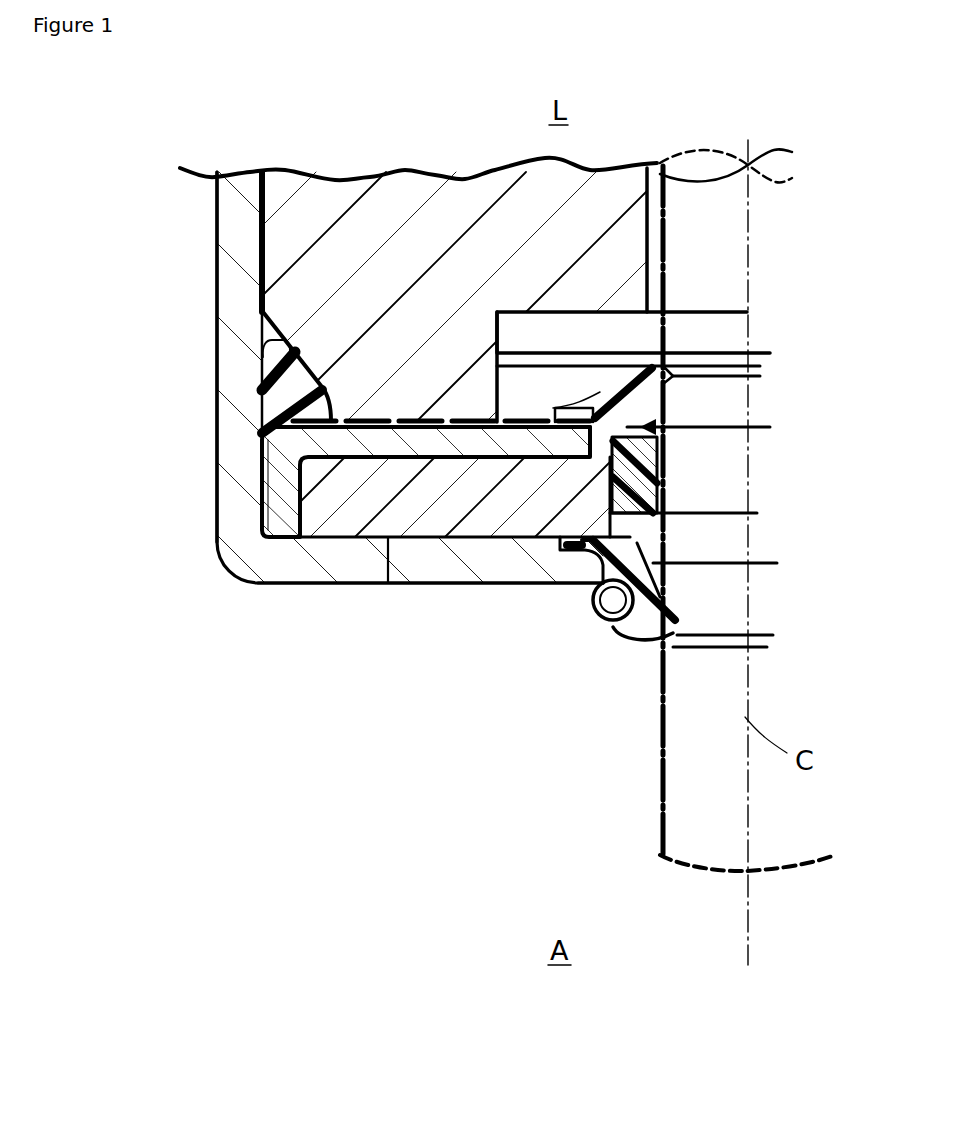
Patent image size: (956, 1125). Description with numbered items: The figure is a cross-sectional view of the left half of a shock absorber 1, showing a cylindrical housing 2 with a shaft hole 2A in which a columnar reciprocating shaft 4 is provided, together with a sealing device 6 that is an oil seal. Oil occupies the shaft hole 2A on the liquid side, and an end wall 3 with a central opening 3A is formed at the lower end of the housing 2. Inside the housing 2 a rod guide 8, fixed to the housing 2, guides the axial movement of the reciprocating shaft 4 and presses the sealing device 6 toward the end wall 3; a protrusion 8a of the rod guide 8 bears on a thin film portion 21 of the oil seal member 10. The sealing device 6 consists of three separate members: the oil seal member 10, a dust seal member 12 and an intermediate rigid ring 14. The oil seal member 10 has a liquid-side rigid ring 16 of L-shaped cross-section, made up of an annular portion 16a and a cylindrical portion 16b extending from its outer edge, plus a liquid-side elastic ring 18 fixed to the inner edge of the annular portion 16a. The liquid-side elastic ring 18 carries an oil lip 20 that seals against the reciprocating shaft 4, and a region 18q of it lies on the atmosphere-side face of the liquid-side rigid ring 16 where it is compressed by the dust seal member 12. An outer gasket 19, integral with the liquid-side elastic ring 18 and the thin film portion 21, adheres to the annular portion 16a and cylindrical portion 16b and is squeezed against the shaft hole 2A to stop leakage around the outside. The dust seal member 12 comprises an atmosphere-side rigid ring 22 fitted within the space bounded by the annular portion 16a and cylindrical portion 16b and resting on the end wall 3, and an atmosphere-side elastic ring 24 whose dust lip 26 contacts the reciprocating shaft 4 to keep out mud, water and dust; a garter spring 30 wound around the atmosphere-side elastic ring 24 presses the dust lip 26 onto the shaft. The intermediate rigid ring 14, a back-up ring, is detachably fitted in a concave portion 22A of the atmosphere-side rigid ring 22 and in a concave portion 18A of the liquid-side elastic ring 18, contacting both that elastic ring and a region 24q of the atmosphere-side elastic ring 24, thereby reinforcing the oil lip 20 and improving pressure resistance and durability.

The shock absorber 1 is at (250, 640).
The housing 2 is at (224, 286).
The shaft hole 2A is at (267, 265).
The end wall 3 is at (353, 580).
The opening 3A is at (390, 577).
The reciprocating shaft 4 is at (663, 852).
The sealing device 6 is at (240, 512).
The rod guide 8 is at (472, 197).
The protrusion 8a is at (514, 376).
The oil seal member 10 is at (273, 367).
The dust seal member 12 is at (337, 533).
The intermediate rigid ring 14 is at (668, 459).
The liquid-side rigid ring 16 is at (273, 455).
The annular portion 16a is at (418, 420).
The cylindrical portion 16b is at (277, 493).
The liquid-side elastic ring 18 is at (593, 398).
The concave portion 18A is at (668, 428).
The region 18q is at (540, 540).
The outer gasket 19 is at (270, 401).
The oil lip 20 is at (673, 383).
The thin film portion 21 is at (380, 415).
The atmosphere-side rigid ring 22 is at (467, 533).
The concave portion 22A is at (658, 493).
The atmosphere-side elastic ring 24 is at (613, 633).
The region 24q is at (660, 538).
The dust lip 26 is at (673, 617).
The garter spring 30 is at (592, 604).